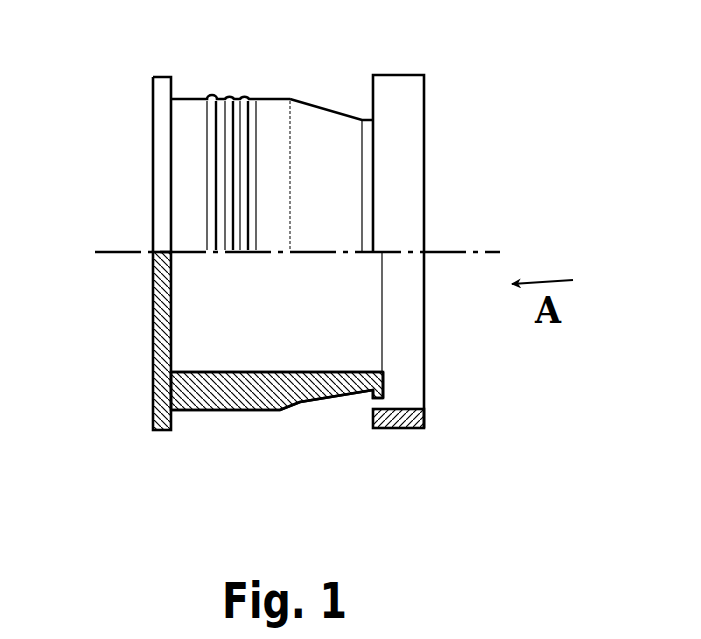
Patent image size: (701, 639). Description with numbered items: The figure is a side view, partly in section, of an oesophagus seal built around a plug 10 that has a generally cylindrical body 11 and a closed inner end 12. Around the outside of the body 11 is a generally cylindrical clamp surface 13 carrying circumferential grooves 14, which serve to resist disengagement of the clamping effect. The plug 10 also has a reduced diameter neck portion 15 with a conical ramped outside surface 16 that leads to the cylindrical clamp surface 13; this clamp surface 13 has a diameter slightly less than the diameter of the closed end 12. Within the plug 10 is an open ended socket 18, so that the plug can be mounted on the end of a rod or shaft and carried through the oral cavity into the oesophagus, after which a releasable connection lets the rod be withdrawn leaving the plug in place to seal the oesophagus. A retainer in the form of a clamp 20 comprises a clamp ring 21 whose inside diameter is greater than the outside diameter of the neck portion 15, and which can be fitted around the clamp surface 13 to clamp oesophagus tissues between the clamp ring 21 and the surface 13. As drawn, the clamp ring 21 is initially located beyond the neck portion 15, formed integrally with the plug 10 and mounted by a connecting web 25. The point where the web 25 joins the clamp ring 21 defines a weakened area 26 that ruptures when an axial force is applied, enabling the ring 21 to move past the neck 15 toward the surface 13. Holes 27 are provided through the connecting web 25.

The plug 10 is at (282, 265).
The body 11 is at (210, 380).
The closed inner end 12 is at (155, 308).
The clamp surface 13 is at (267, 411).
The circumferential grooves 14 is at (228, 100).
The neck portion 15 is at (350, 90).
The conical ramped outside surface 16 is at (310, 103).
The open ended socket 18 is at (317, 368).
The clamp 20 is at (430, 107).
The clamp ring 21 is at (403, 429).
The connecting web 25 is at (384, 376).
The weakened area 26 is at (371, 400).
The holes 27 is at (384, 396).